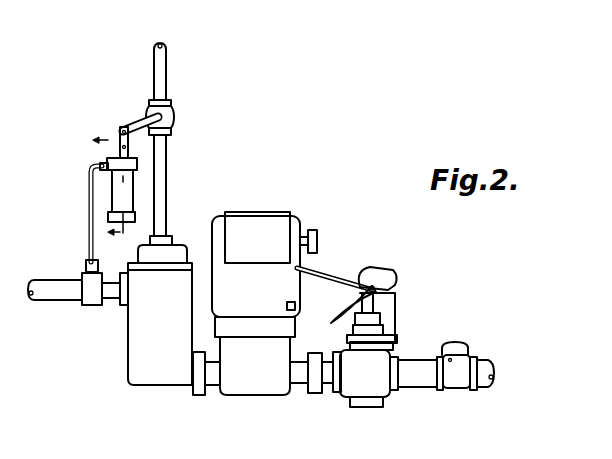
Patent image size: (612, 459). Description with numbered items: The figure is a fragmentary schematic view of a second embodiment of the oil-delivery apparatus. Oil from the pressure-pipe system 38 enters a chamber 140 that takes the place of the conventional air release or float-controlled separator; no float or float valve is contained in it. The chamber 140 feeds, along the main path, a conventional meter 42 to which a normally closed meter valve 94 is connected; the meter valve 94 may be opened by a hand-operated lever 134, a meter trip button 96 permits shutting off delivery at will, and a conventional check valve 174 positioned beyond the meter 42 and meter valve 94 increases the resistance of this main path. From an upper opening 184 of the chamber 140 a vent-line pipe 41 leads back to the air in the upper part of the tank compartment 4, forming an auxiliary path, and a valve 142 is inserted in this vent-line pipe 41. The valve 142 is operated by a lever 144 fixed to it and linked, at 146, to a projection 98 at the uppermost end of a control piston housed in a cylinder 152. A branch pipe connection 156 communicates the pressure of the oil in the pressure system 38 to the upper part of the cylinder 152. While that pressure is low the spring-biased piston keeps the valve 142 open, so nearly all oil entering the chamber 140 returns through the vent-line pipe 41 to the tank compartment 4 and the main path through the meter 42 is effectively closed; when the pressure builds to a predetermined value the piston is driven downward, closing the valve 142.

The tank compartment 4 is at (99, 192).
The pressure-pipe system 38 is at (65, 292).
The vent-line pipe 41 is at (163, 177).
The meter 42 is at (252, 223).
The meter valve 94 is at (353, 385).
The meter trip button 96 is at (295, 302).
The projection 98 is at (107, 163).
The hand-operated lever 134 is at (327, 323).
The chamber 140 is at (158, 377).
The valve 142 is at (172, 107).
The lever 144 is at (132, 121).
The link 146 is at (120, 128).
The cylinder 152 is at (117, 192).
The branch pipe connection 156 is at (92, 205).
The check valve 174 is at (458, 375).
The upper opening 184 is at (168, 237).